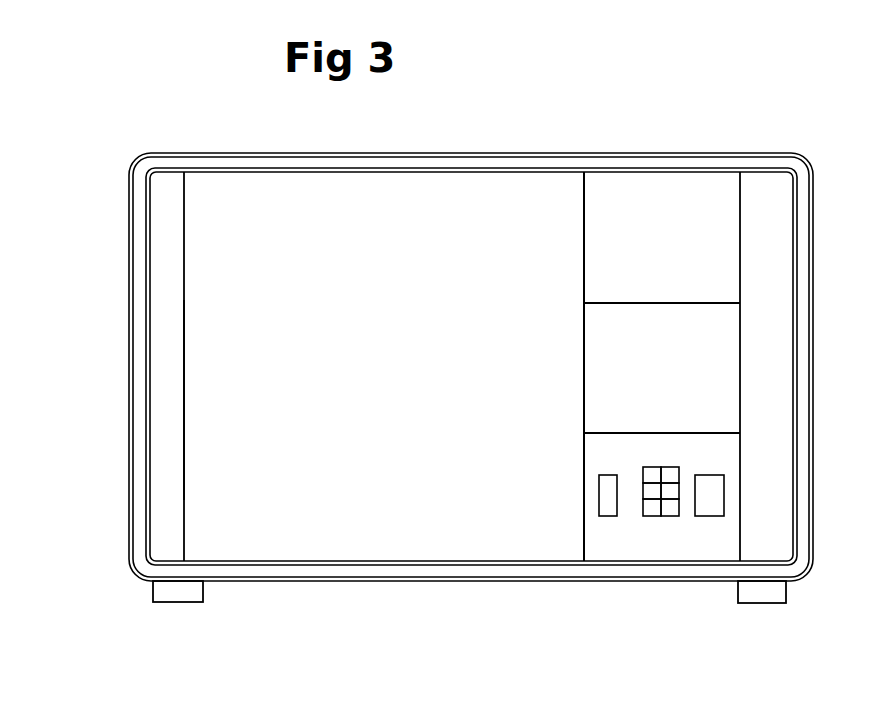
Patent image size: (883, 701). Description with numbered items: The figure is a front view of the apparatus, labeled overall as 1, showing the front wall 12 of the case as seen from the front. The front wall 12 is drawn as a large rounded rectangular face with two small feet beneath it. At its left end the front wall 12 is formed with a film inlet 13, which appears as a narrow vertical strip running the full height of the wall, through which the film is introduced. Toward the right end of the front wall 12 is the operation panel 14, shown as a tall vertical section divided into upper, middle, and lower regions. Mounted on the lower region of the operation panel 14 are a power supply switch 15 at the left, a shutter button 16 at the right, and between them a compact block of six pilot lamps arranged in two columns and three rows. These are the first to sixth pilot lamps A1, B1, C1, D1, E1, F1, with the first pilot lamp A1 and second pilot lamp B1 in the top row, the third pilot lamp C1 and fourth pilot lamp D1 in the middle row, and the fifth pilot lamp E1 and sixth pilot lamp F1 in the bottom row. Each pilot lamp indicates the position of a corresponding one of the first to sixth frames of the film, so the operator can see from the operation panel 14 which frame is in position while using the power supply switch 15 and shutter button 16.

The cabinet housing 1 is at (818, 195).
The front wall 12 is at (440, 196).
The film inlet 13 is at (186, 434).
The operation panel 14 is at (623, 530).
The power supply switch 15 is at (600, 490).
The shutter button 16 is at (711, 517).
The first pilot lamp A1 is at (653, 475).
The second pilot lamp B1 is at (671, 478).
The third pilot lamp C1 is at (648, 492).
The fourth pilot lamp D1 is at (672, 492).
The fifth pilot lamp E1 is at (653, 510).
The sixth pilot lamp F1 is at (668, 510).